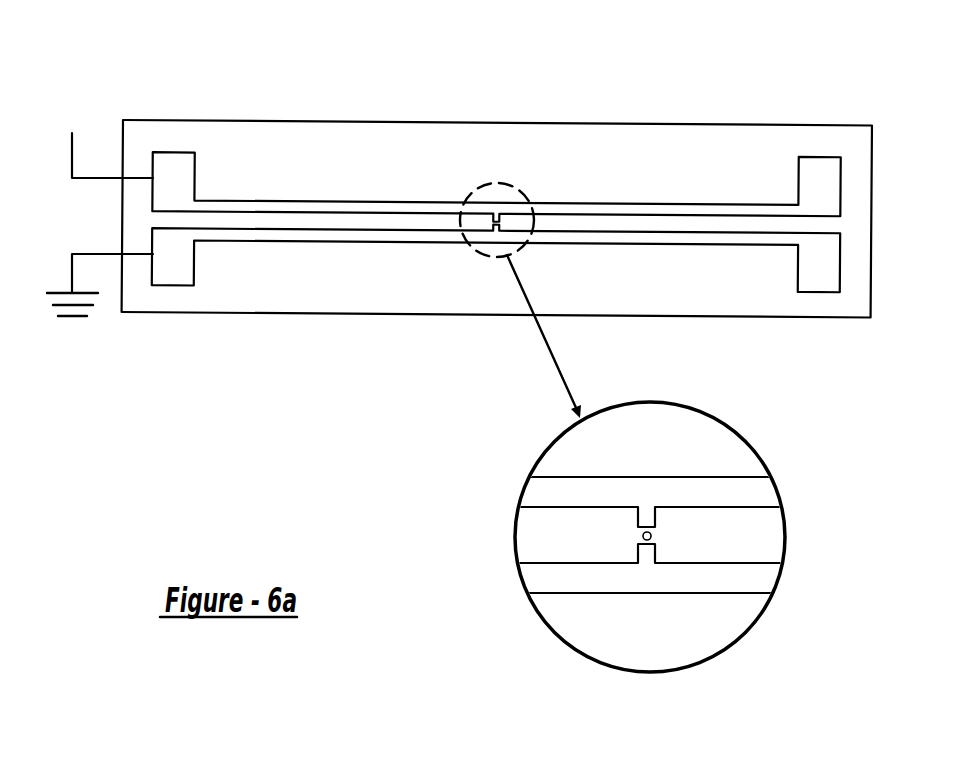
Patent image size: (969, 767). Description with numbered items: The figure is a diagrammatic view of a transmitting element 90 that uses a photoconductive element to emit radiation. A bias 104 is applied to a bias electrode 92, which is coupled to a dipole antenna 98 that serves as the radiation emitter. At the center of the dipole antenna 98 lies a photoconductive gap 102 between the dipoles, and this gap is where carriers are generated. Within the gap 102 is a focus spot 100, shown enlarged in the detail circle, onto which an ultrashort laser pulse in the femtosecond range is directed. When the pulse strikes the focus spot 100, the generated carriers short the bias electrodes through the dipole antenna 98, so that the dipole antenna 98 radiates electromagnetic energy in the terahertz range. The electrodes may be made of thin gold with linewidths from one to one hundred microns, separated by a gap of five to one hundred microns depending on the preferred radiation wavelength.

The transmitting element 90 is at (495, 72).
The bias electrode 92 is at (308, 203).
The dipole antenna 98 is at (656, 519).
The focus spot 100 is at (652, 536).
The gap 102 is at (624, 533).
The bias 104 is at (100, 211).